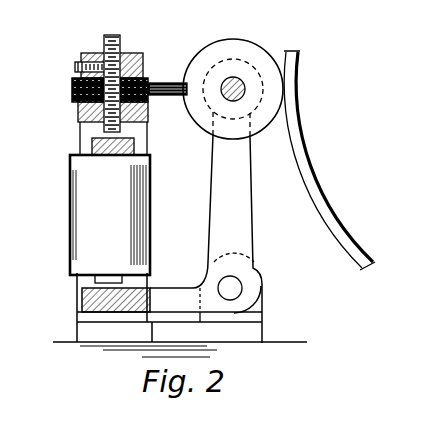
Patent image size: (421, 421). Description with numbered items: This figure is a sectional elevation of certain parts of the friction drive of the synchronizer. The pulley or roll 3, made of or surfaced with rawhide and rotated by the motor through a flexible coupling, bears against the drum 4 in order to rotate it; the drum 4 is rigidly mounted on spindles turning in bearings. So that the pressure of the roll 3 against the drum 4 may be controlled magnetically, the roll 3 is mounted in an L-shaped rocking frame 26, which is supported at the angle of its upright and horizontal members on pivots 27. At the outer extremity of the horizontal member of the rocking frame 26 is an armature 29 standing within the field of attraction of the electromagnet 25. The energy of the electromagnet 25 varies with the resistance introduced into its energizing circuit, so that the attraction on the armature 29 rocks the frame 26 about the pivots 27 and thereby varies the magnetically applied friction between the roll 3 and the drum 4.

The roll 3 is at (196, 56).
The drum 4 is at (323, 220).
The electromagnet 25 is at (150, 197).
The L-shaped rocking frame 26 is at (250, 195).
The pivots 27 is at (232, 288).
The armature 29 is at (82, 300).